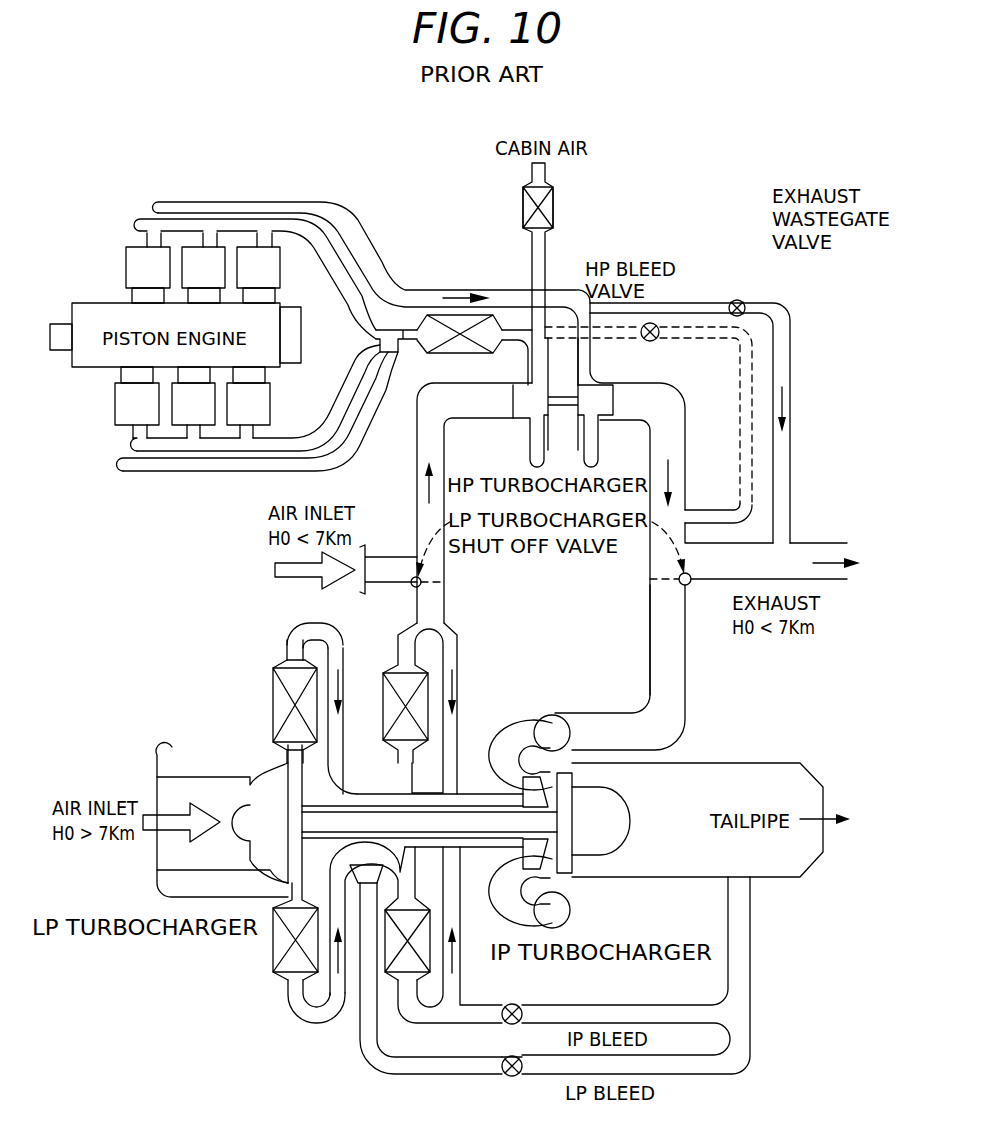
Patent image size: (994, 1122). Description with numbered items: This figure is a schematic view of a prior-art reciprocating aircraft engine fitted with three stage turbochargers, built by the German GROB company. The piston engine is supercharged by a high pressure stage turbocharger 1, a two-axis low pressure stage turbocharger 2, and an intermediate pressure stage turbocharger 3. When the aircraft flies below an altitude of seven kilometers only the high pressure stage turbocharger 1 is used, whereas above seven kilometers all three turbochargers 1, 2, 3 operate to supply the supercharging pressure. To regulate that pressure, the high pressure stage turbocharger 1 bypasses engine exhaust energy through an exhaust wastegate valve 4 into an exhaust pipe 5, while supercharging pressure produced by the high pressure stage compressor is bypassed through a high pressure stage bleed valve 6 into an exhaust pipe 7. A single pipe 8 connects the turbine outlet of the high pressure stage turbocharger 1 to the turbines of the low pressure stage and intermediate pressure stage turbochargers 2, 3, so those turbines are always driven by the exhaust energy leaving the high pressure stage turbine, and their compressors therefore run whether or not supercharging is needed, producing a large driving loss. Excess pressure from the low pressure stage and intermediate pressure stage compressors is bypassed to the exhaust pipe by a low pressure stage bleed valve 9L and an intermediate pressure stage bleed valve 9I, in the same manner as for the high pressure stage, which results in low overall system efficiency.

The high pressure stage turbocharger 1 is at (527, 418).
The two-axis low pressure stage turbocharger 2 is at (272, 773).
The intermediate pressure stage turbocharger 3 is at (381, 762).
The exhaust wastegate valve 4 is at (744, 300).
The exhaust pipe 5 is at (783, 488).
The high pressure stage bleed valve 6 is at (659, 323).
The exhaust pipe 7 is at (673, 443).
The pipe 8 is at (688, 681).
The intermediate pressure stage bleed valve 9I is at (507, 1024).
The low pressure stage bleed valve 9L is at (507, 1078).